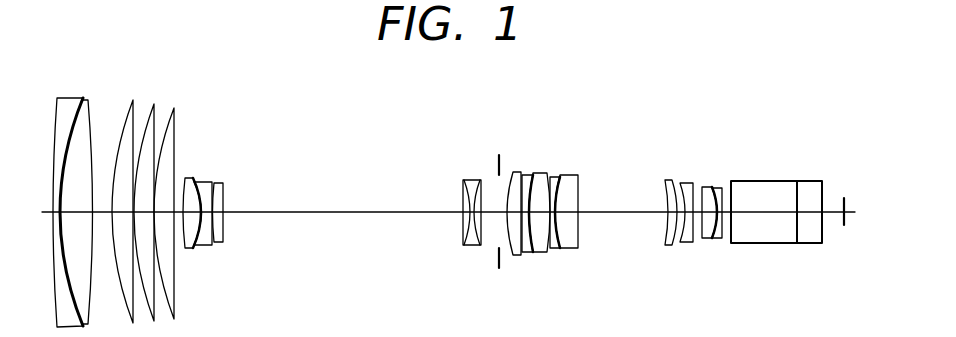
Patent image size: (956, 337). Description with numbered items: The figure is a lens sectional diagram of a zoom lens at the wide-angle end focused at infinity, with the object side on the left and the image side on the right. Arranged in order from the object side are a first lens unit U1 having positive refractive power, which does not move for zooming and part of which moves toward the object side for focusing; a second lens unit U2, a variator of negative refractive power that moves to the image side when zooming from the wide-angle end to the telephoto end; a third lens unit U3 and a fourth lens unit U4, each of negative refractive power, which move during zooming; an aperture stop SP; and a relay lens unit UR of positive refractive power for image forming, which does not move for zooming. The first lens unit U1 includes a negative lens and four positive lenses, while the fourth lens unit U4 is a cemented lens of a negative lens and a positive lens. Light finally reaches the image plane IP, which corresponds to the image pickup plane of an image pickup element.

The first lens unit U1 is at (177, 90).
The second lens unit U2 is at (212, 173).
The third lens unit U3 is at (221, 183).
The fourth lens unit U4 is at (485, 170).
The aperture stop SP is at (498, 150).
The relay lens unit UR is at (725, 162).
The image plane IP is at (844, 197).